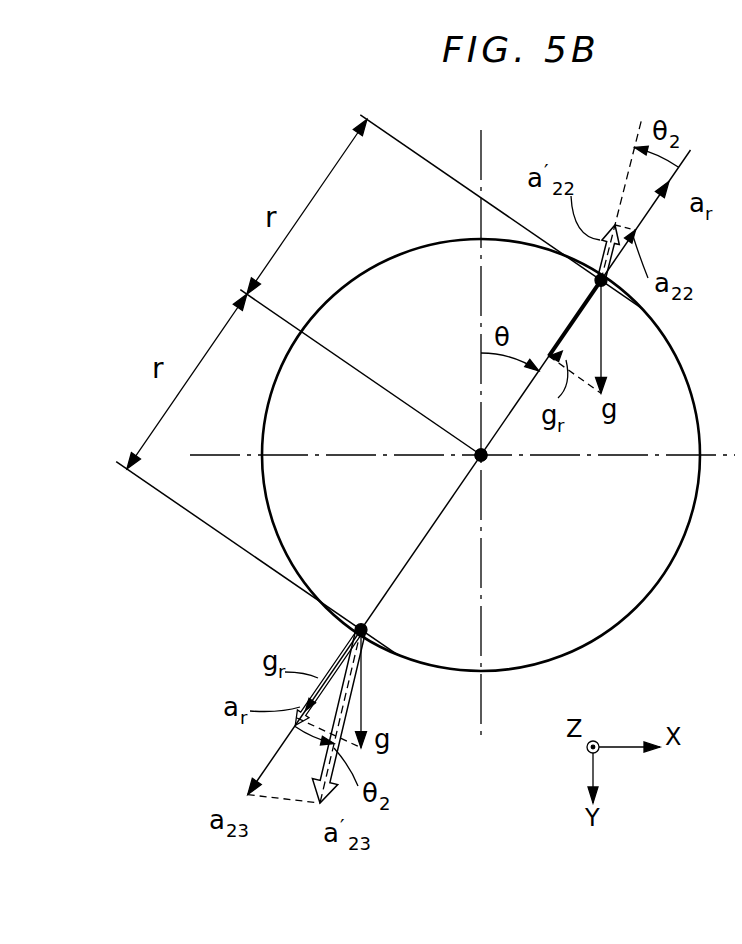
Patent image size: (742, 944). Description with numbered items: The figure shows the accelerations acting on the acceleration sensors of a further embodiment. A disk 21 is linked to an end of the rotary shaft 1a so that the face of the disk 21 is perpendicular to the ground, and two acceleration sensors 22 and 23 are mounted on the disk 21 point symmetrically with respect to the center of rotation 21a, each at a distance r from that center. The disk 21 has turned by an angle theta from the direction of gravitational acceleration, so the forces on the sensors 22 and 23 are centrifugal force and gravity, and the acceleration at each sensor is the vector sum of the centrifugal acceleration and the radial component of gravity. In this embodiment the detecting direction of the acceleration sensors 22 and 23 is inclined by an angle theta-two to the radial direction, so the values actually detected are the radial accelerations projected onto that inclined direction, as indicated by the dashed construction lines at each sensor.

The disk 21 is at (645, 562).
The center of rotation 21a is at (484, 458).
The rotary shaft 1a is at (538, 486).
The acceleration sensor 22 is at (597, 282).
The acceleration sensor 23 is at (368, 627).